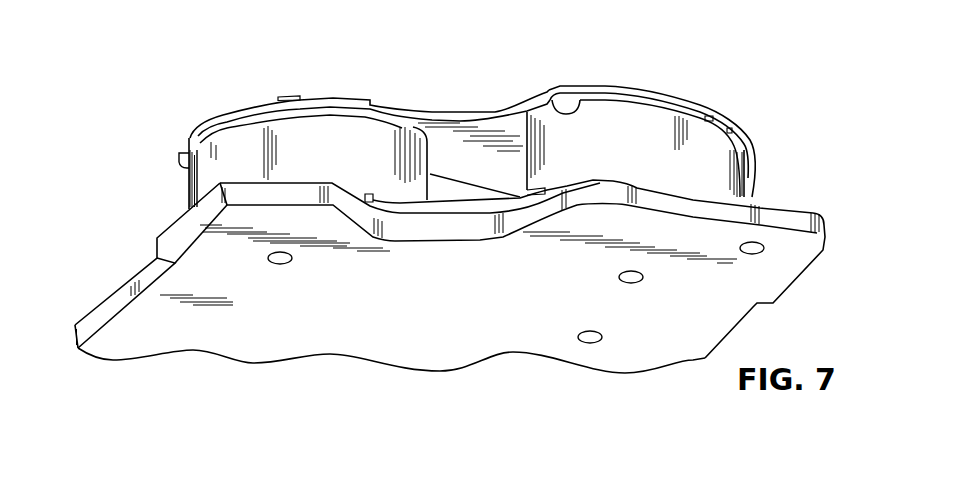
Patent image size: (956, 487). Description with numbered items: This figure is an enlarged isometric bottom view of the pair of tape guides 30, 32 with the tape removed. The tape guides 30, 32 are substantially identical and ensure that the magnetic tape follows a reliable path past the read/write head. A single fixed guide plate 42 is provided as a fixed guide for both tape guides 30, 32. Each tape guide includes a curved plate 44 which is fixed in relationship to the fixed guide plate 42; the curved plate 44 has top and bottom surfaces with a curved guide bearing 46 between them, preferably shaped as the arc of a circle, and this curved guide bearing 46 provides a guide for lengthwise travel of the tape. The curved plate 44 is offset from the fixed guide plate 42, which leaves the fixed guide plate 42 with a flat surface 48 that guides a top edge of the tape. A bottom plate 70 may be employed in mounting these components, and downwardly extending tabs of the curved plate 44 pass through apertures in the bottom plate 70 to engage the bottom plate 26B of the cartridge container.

The bottom plate 26B is at (143, 307).
The tape guide 30 is at (343, 95).
The tape guide 32 is at (632, 86).
The fixed guide plate 42 is at (222, 116).
The curved plate 44 is at (212, 168).
The curved guide bearing 46 is at (297, 160).
The flat surface 48 is at (563, 110).
The bottom plate 70 is at (465, 203).